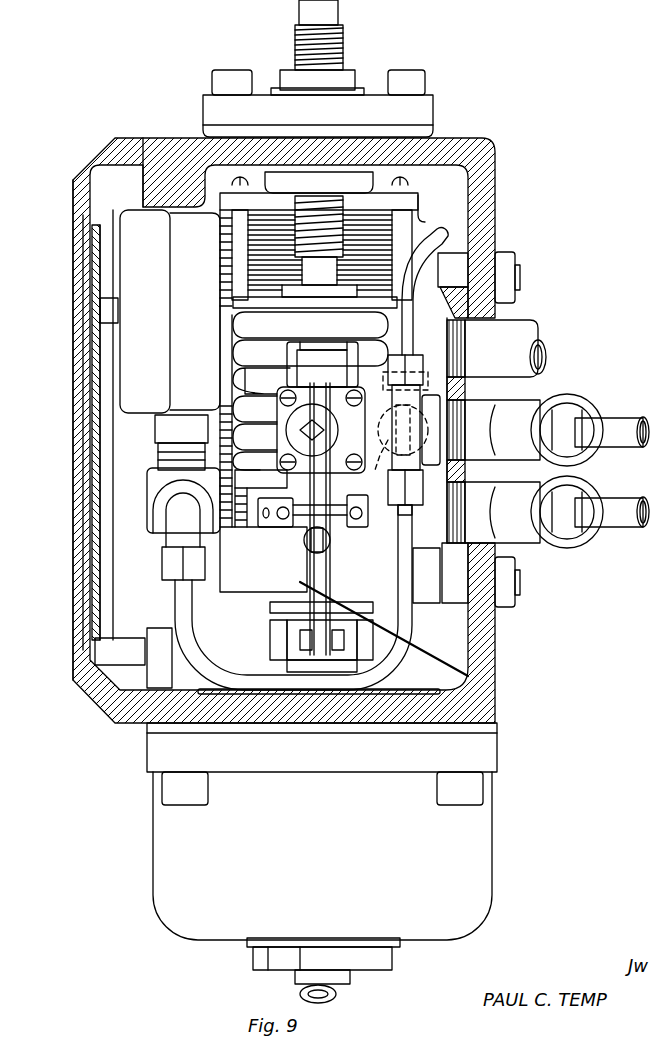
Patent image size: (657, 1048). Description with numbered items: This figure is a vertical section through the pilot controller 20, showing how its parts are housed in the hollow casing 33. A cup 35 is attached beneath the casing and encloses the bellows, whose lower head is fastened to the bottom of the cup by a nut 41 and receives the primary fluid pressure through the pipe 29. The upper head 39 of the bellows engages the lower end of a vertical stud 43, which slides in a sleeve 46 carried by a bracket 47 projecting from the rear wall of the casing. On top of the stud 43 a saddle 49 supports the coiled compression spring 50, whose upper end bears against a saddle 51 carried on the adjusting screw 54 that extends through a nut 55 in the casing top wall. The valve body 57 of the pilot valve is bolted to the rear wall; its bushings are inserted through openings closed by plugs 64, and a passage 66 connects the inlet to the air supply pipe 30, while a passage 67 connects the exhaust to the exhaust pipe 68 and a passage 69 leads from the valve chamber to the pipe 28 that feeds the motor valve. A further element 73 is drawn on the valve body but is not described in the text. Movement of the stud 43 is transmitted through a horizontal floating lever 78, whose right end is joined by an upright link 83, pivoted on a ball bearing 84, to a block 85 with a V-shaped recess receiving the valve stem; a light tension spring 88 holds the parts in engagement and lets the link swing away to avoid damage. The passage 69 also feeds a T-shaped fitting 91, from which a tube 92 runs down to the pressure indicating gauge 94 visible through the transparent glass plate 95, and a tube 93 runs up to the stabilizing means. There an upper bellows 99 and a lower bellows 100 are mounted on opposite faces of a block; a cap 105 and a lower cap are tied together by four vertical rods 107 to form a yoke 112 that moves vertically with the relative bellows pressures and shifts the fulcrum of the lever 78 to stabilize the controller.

The pilot controller 20 is at (125, 779).
The pipe 28 is at (612, 418).
The pipe 29 is at (348, 980).
The pipe 30 is at (600, 528).
The casing 33 is at (497, 688).
The cup 35 is at (492, 852).
The upper head 39 is at (405, 689).
The nut 41 is at (393, 957).
The stud 43 is at (287, 665).
The sleeve 46 is at (277, 527).
The bracket 47 is at (248, 592).
The saddle 49 is at (261, 496).
The coiled compression spring 50 is at (244, 353).
The saddle 51 is at (352, 305).
The adjusting screw 54 is at (344, 50).
The nut 55 is at (428, 108).
The valve body 57 is at (395, 545).
The plugs 64 is at (315, 395).
The passage 66 is at (400, 505).
The passage 67 is at (393, 372).
The exhaust pipe 68 is at (540, 345).
The passage 69 is at (400, 446).
The valve body 73 is at (280, 435).
The floating lever 78 is at (270, 640).
The link 83 is at (325, 588).
The ball bearing 84 is at (325, 655).
The block 85 is at (330, 397).
The tension spring 88 is at (308, 548).
The T-shaped fitting 91 is at (392, 412).
The tube 92 is at (412, 622).
The tube 93 is at (446, 232).
The pressure indicating gauge 94 is at (170, 311).
The transparent glass plate 95 is at (98, 310).
The bellows 99 is at (418, 200).
The bellows 100 is at (218, 442).
The cap 105 is at (232, 200).
The rods 107 is at (243, 377).
The yoke 112 is at (398, 198).